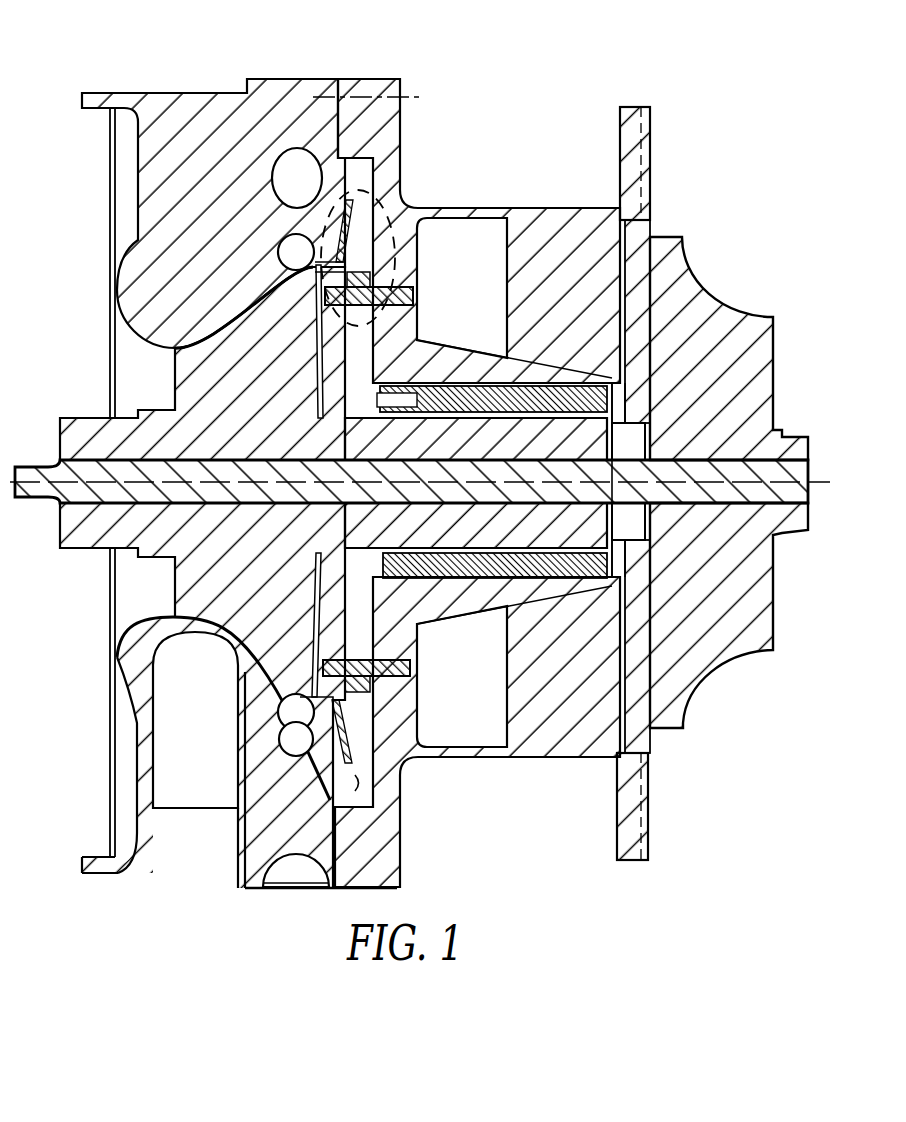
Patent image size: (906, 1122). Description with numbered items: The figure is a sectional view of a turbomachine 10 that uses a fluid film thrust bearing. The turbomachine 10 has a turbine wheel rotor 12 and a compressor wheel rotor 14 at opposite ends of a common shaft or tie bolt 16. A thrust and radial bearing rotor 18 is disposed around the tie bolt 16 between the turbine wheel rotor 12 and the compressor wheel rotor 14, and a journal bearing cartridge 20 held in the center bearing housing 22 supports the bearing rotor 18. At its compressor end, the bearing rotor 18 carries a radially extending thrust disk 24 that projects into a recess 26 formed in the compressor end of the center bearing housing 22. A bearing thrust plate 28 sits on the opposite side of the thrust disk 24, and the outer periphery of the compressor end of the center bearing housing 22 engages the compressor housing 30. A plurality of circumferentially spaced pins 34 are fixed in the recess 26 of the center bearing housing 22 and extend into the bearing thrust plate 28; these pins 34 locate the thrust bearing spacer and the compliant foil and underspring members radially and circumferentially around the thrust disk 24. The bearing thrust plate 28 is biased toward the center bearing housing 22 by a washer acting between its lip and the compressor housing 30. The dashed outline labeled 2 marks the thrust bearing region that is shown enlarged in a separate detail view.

The detail region shown in FIG. 2 is at (403, 190).
The turbomachine 10 is at (683, 187).
The turbine wheel rotor 12 is at (703, 280).
The compressor wheel rotor 14 is at (172, 382).
The tie bolt 16 is at (750, 507).
The bearing rotor 18 is at (613, 448).
The journal bearing cartridge 20 is at (590, 578).
The center bearing housing 22 is at (470, 757).
The thrust disk 24 is at (373, 593).
The recess 26 is at (362, 783).
The bearing thrust plate 28 is at (310, 767).
The compressor housing 30 is at (207, 93).
The pins 34 is at (413, 296).